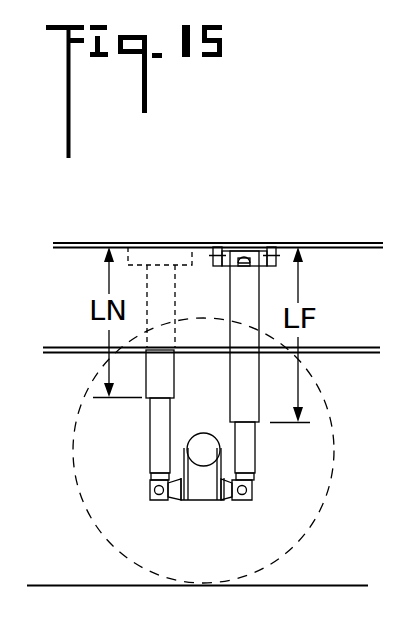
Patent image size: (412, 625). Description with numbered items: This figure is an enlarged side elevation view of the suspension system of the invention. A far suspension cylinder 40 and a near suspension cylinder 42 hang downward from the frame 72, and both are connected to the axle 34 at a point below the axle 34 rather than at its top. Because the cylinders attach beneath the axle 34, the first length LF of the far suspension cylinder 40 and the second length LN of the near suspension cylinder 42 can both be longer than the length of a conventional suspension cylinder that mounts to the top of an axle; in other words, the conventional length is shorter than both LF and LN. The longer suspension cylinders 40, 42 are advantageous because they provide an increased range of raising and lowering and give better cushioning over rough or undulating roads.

The frame 72 is at (298, 247).
The far suspension cylinder 40 is at (248, 433).
The near suspension cylinder 42 is at (157, 423).
The axle 34 is at (200, 448).